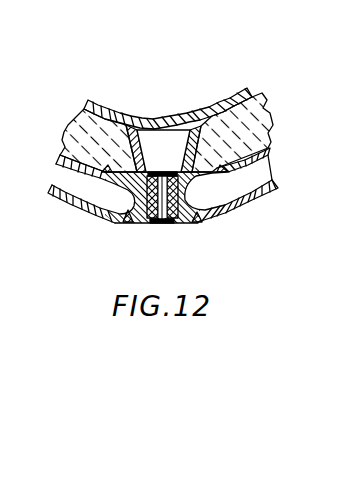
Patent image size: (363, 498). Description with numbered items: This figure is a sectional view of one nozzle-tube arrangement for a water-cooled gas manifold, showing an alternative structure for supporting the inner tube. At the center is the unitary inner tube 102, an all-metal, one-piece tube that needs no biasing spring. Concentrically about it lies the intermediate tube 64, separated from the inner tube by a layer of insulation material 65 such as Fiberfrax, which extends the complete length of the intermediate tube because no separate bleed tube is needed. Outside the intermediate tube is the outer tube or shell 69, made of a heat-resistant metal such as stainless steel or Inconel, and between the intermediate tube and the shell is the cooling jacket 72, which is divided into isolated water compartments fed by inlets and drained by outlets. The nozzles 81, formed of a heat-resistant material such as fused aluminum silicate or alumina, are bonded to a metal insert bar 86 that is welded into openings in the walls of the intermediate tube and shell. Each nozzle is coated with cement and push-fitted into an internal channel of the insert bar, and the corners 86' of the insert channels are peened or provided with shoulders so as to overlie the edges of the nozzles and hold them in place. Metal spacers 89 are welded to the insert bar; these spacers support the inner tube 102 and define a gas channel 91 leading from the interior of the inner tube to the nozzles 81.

The unitary inner tube 102 is at (228, 94).
The metal spacers 89 is at (137, 128).
The gas channel 91 is at (162, 150).
The insulation material 65 is at (250, 118).
The intermediate tube 64 is at (272, 152).
The outer tube or shell 69 is at (277, 191).
The cooling jacket 72 is at (66, 178).
The metal insert bar 86 is at (129, 237).
The corners of the insert channels 86' is at (197, 232).
The nozzles 81 is at (162, 224).